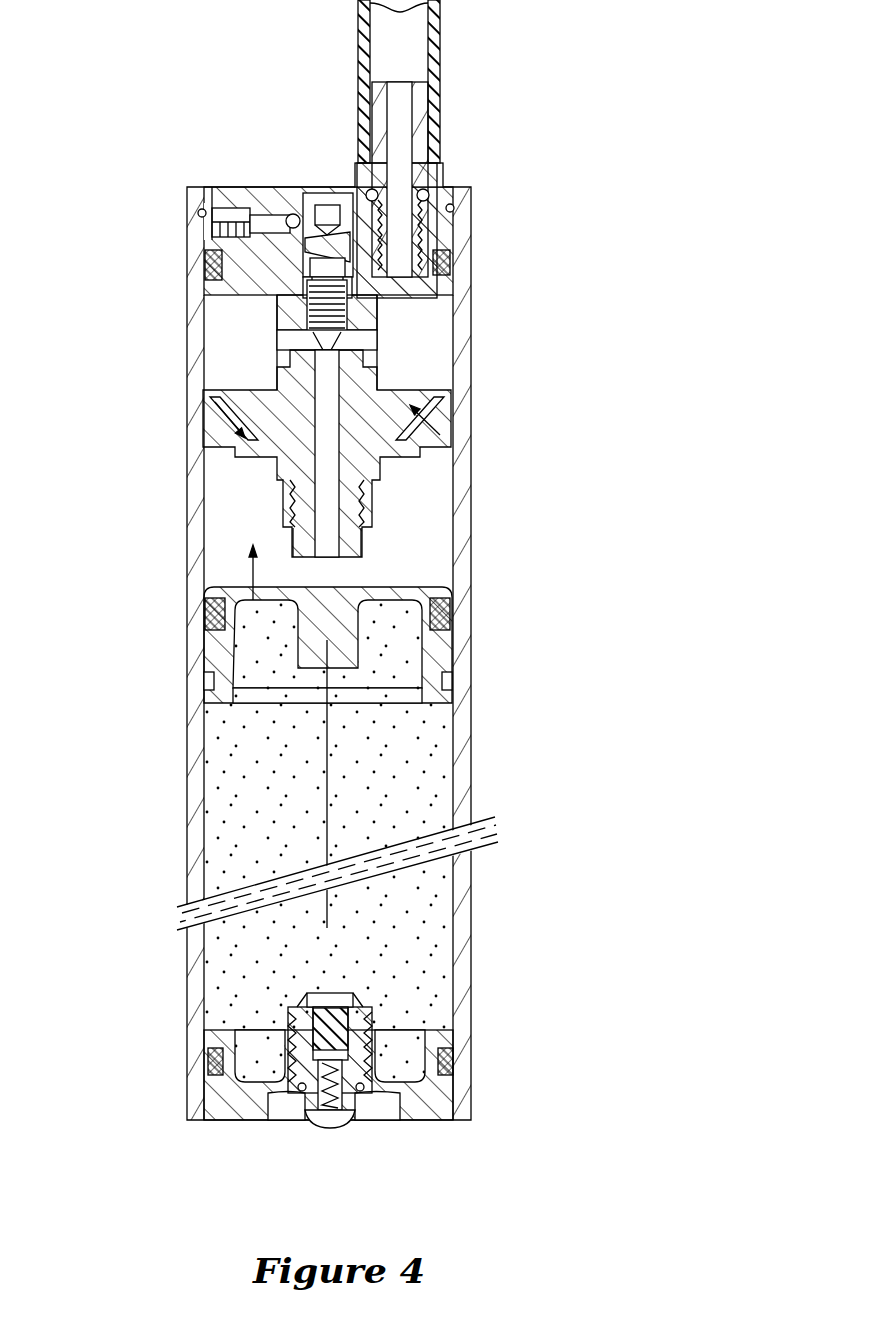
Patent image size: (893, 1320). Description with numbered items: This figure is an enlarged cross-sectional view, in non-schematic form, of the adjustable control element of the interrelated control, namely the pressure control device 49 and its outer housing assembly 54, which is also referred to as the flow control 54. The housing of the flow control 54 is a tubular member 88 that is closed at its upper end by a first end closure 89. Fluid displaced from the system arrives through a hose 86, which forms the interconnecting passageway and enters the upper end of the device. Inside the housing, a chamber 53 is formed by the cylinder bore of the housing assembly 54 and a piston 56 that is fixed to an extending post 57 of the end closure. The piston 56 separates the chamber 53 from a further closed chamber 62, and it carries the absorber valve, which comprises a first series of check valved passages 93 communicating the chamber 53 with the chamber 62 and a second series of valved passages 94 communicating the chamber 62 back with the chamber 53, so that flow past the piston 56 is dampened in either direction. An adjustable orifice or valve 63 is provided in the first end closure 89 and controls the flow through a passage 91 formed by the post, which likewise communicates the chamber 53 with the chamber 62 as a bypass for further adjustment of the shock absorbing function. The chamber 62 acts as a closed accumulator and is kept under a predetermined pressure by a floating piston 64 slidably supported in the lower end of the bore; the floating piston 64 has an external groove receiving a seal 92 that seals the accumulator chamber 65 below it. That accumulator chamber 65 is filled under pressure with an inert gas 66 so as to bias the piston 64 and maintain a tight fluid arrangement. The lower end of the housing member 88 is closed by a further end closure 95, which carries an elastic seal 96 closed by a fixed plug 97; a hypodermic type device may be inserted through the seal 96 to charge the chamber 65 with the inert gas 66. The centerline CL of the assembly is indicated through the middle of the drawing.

The pressure control device 49 is at (157, 516).
The chamber 53 is at (235, 338).
The outer housing assembly 54 is at (185, 824).
The piston 56 is at (215, 437).
The extending post 57 is at (379, 356).
The closed chamber 62 is at (432, 542).
The adjustable orifice 63 is at (347, 213).
The floating piston 64 is at (440, 648).
The accumulator chamber 65 is at (420, 905).
The inert gas 66 is at (395, 770).
The hose 86 is at (423, 38).
The tubular member 88 is at (180, 302).
The first end closure 89 is at (237, 198).
The passage 91 is at (330, 390).
The seal 92 is at (453, 615).
The check valved passages 93 is at (253, 455).
The valved passages 94 is at (430, 450).
The further end closure 95 is at (217, 1095).
The elastic seal 96 is at (327, 1023).
The fixed plug 97 is at (327, 1120).
The centerline CL is at (330, 752).